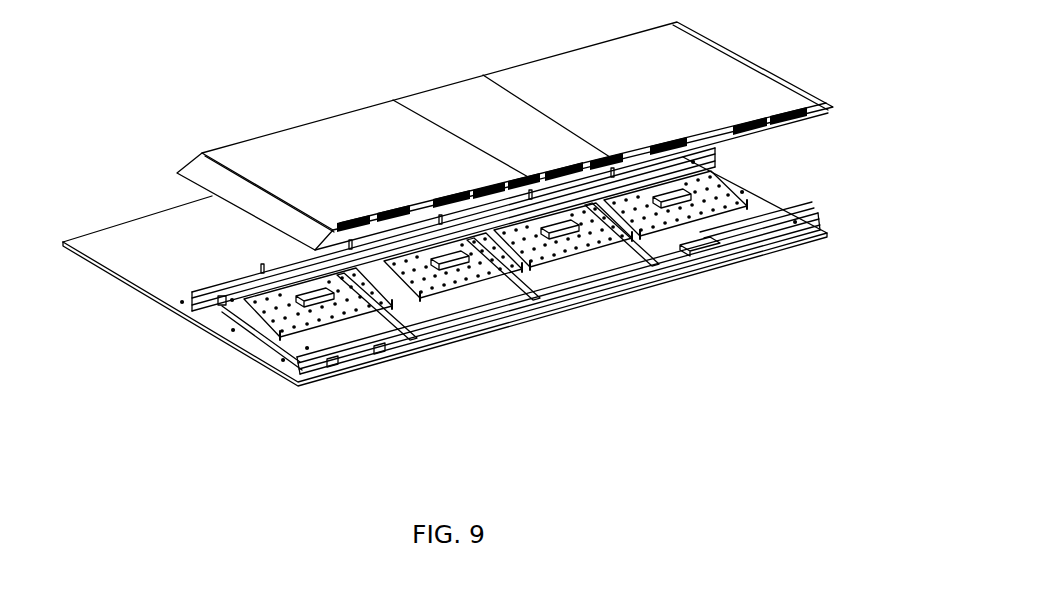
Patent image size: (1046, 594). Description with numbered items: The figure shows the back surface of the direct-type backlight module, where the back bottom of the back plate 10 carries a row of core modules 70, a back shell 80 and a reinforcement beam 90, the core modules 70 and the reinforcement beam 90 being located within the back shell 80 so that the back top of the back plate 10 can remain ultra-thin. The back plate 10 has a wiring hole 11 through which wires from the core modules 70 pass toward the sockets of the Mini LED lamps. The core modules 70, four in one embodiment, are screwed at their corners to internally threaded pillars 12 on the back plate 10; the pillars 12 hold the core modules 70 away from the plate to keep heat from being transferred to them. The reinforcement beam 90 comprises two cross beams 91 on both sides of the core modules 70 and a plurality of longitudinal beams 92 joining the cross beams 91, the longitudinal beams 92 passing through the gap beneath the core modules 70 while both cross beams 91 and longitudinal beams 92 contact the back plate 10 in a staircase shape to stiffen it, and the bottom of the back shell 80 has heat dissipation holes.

The back plate 10 is at (155, 265).
The wiring hole 11 is at (465, 335).
The pillars 12 is at (380, 350).
The core modules 70 is at (527, 313).
The back shell 80 is at (223, 182).
The reinforcement beam 90 is at (453, 333).
The cross beams 91 is at (222, 298).
The longitudinal beams 92 is at (498, 311).